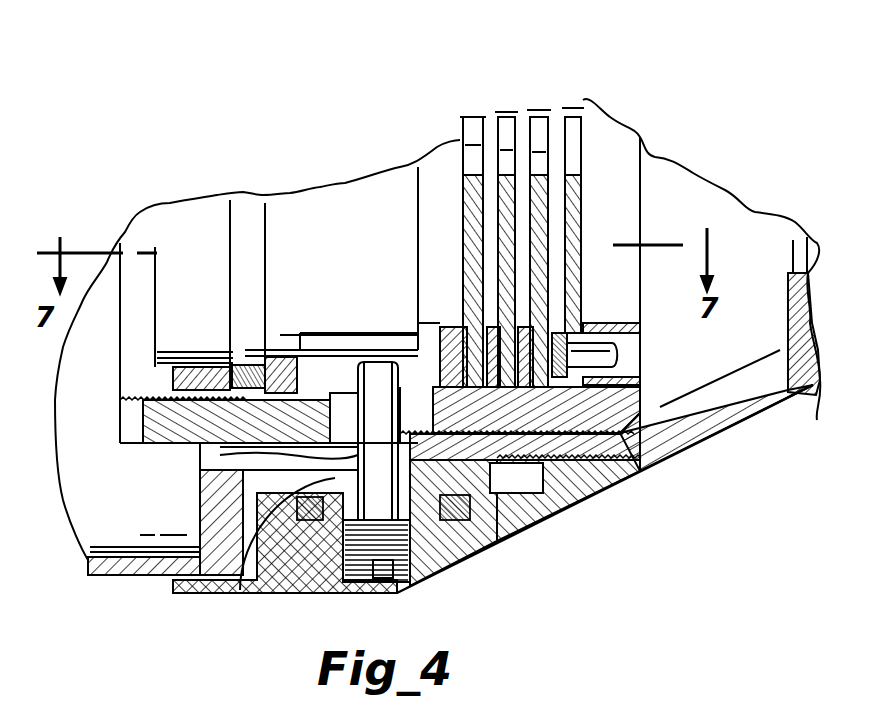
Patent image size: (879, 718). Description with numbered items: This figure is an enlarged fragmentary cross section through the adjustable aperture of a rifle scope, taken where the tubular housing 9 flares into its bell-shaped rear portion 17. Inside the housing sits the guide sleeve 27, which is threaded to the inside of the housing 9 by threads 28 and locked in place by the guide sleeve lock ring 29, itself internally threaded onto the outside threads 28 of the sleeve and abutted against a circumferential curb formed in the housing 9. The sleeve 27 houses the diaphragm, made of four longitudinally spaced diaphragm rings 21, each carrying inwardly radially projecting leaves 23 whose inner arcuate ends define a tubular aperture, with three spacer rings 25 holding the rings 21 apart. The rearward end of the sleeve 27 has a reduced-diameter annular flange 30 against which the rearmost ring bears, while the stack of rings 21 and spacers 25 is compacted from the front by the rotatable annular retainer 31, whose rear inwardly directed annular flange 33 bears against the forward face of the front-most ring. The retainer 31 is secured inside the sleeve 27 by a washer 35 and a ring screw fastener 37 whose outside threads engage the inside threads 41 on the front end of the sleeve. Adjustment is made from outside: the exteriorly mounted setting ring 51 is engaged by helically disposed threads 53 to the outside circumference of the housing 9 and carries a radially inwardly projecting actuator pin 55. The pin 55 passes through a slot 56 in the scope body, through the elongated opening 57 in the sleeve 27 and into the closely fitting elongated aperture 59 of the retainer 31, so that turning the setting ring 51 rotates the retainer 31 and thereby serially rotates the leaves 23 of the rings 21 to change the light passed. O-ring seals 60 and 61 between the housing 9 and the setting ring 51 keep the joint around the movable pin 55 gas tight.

The diaphragm rings 21 is at (570, 97).
The leaves 23 is at (577, 177).
The spacer rings 25 is at (562, 330).
The annular flange 30 is at (607, 323).
The annular flange 33 is at (447, 347).
The elongated aperture 59 is at (305, 352).
The rotatable annular retainer 31 is at (292, 352).
The washer 35 is at (245, 362).
The ring screw fastener 37 is at (182, 367).
The inside threads 41 is at (157, 397).
The elongated opening 57 is at (198, 446).
The actuator pin 55 is at (220, 453).
The tubular housing 9 is at (127, 577).
The slot 56 is at (297, 592).
The O-ring seal 60 is at (253, 592).
The setting ring 51 is at (453, 550).
The O-ring seal 61 is at (470, 530).
The guide sleeve lock ring 29 is at (487, 530).
The threads 28 is at (550, 450).
The guide sleeve 27 is at (590, 437).
The helically disposed threads 53 is at (640, 440).
The flared bell-shaped rear portion 17 is at (757, 393).